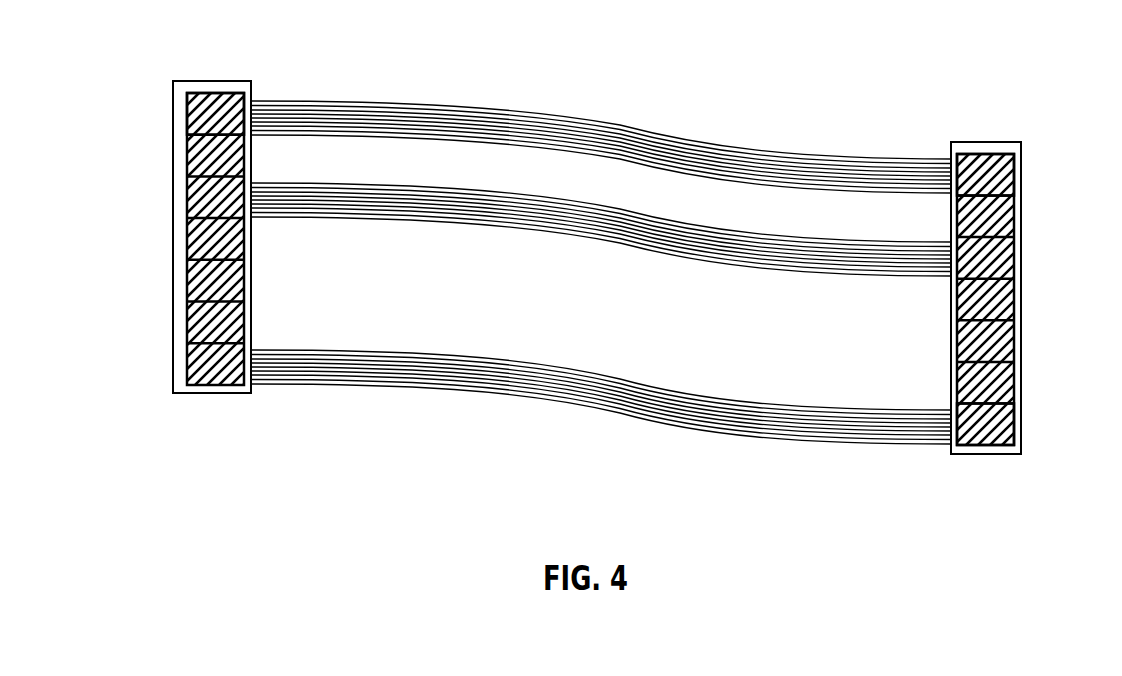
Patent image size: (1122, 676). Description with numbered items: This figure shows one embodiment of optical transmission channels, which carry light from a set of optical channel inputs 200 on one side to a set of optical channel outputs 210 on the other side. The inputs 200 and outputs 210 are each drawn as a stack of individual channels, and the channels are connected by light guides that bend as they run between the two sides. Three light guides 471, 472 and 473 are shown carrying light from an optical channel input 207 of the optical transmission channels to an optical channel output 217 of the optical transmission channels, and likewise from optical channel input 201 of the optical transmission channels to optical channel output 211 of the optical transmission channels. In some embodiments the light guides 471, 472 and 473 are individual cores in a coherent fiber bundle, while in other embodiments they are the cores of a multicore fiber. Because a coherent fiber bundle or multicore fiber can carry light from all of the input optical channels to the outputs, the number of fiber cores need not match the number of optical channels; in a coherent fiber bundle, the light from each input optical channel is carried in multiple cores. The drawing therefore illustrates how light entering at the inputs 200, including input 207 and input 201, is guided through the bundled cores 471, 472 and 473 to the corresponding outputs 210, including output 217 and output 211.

The optical channel inputs 200 is at (172, 107).
The optical channel input 201 is at (187, 362).
The optical channel input 207 is at (187, 118).
The optical channel outputs 210 is at (1022, 165).
The optical channel output 211 is at (1012, 190).
The optical channel output 217 is at (1012, 415).
The light guide 471 is at (458, 107).
The light guide 472 is at (529, 125).
The light guide 473 is at (577, 145).